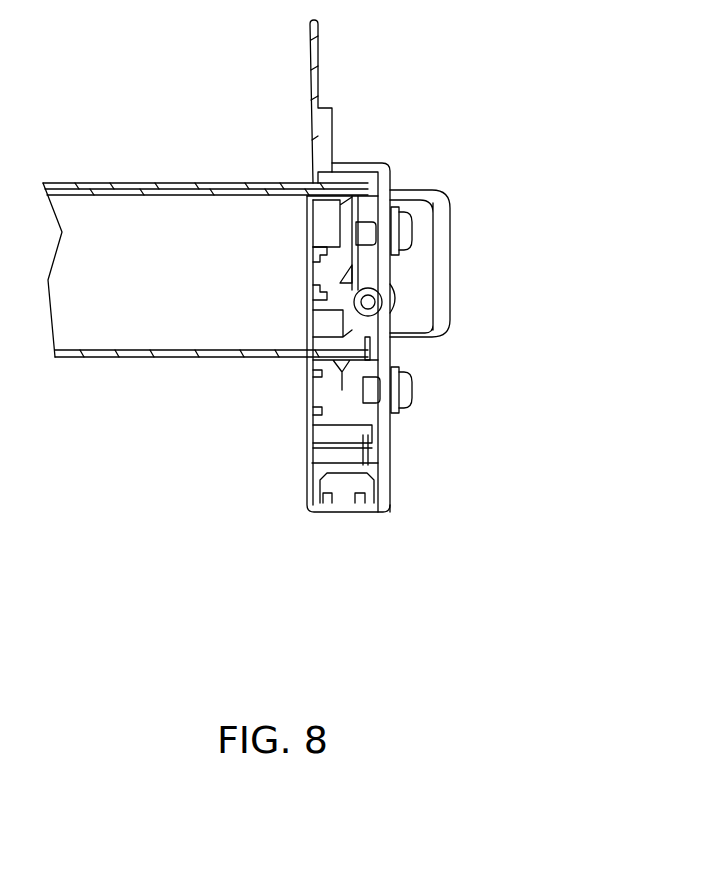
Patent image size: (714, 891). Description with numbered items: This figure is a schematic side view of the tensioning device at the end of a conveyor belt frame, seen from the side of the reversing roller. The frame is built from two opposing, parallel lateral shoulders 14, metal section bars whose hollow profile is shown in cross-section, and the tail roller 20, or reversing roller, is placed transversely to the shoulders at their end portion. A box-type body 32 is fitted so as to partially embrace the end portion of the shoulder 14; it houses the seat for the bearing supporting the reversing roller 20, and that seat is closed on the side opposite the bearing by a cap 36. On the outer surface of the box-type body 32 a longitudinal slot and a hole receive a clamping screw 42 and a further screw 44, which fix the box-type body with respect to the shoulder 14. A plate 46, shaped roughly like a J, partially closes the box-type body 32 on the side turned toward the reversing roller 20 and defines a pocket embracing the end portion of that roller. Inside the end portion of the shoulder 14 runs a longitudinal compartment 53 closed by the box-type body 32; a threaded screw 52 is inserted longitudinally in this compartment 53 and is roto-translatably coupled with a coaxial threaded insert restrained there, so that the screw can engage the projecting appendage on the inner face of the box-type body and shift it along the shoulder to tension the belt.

The lateral shoulder 14 is at (308, 433).
The tail roller 20 is at (148, 295).
The box-type body 32 is at (380, 167).
The cap 36 is at (452, 282).
The clamping screw 42 is at (405, 228).
The further screw 44 is at (403, 393).
The plate 46 is at (328, 137).
The threaded screw 52 is at (378, 307).
The compartment 53 is at (372, 278).